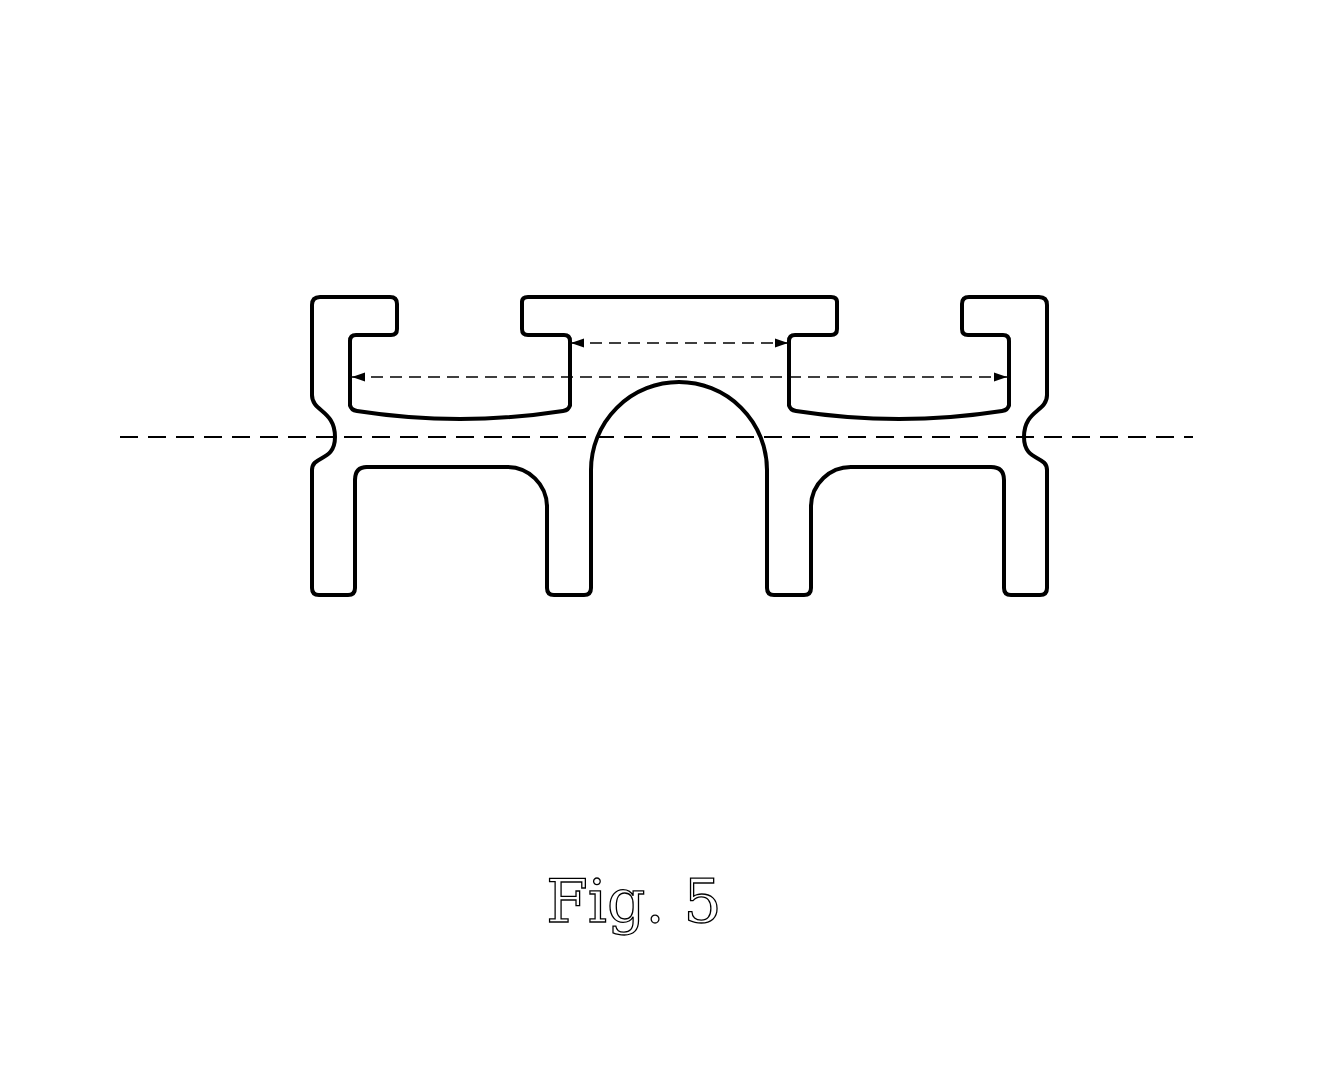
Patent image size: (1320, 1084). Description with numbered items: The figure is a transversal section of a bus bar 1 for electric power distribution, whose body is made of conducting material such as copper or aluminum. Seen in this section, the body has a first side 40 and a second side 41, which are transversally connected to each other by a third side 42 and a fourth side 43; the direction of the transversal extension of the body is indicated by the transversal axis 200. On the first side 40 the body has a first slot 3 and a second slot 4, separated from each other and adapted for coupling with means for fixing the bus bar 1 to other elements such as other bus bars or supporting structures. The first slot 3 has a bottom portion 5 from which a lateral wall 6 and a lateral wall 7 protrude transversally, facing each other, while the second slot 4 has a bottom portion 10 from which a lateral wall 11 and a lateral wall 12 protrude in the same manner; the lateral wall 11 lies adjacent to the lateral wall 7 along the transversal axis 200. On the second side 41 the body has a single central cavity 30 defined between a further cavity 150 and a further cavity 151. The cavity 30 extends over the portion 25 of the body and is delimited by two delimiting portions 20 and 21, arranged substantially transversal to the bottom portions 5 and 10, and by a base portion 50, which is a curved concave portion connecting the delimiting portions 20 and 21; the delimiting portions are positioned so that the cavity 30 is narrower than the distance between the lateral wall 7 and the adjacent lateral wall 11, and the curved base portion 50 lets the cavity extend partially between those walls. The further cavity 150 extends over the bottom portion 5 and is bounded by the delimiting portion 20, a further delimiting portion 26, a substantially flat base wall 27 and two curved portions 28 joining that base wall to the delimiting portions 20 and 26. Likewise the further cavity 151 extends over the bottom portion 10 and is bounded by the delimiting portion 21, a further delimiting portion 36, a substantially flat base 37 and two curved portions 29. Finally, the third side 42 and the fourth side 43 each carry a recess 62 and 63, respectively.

The bus bar 1 is at (685, 436).
The first slot 3 is at (364, 461).
The second slot 4 is at (1009, 435).
The bottom portion 5 is at (420, 410).
The lateral wall 6 is at (348, 357).
The lateral wall 7 is at (565, 358).
The bottom portion 10 is at (935, 412).
The lateral wall 11 is at (795, 358).
The lateral wall 12 is at (1012, 358).
The delimiting portion 20 is at (568, 555).
The delimiting portion 21 is at (793, 555).
The portion of the body 25 is at (703, 366).
The further delimiting portion 26 is at (333, 560).
The base wall 27 is at (487, 477).
The curved portions 28 is at (355, 471).
The curved portions 29 is at (1003, 470).
The cavity 30 is at (694, 548).
The further delimiting portion 36 is at (1025, 555).
The flat base 37 is at (943, 475).
The first side 40 is at (760, 297).
The second side 41 is at (558, 598).
The third side 42 is at (308, 516).
The fourth side 43 is at (1052, 530).
The base portion 50 is at (650, 392).
The recess 62 is at (308, 418).
The recess 63 is at (1045, 418).
The further cavity 150 is at (403, 597).
The further cavity 151 is at (912, 542).
The transversal axis 200 is at (1170, 432).